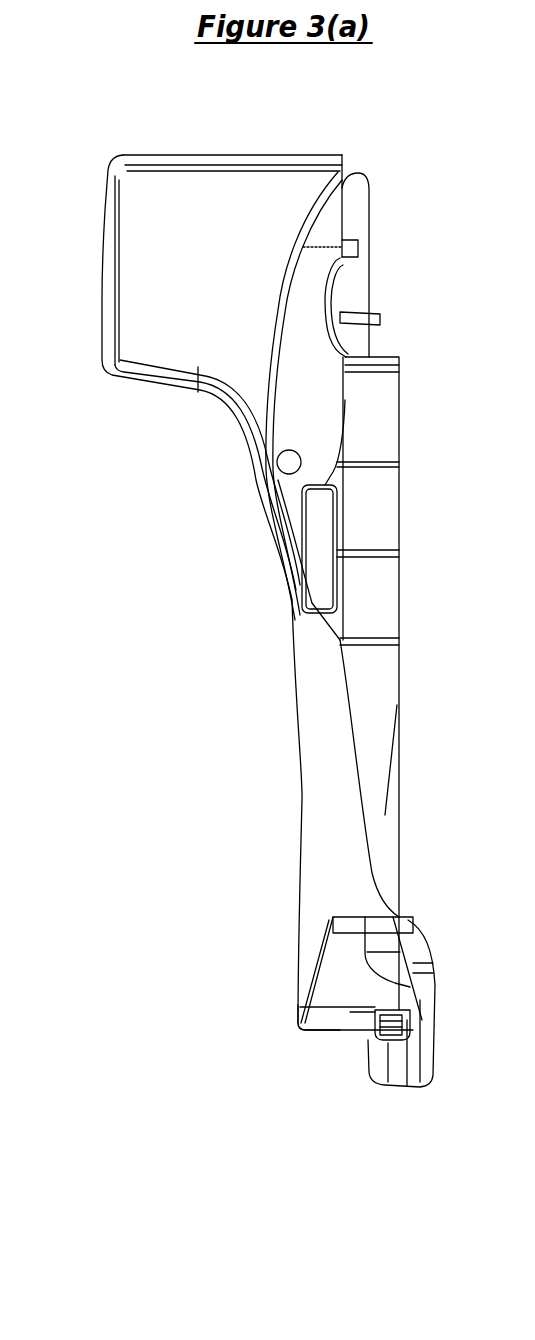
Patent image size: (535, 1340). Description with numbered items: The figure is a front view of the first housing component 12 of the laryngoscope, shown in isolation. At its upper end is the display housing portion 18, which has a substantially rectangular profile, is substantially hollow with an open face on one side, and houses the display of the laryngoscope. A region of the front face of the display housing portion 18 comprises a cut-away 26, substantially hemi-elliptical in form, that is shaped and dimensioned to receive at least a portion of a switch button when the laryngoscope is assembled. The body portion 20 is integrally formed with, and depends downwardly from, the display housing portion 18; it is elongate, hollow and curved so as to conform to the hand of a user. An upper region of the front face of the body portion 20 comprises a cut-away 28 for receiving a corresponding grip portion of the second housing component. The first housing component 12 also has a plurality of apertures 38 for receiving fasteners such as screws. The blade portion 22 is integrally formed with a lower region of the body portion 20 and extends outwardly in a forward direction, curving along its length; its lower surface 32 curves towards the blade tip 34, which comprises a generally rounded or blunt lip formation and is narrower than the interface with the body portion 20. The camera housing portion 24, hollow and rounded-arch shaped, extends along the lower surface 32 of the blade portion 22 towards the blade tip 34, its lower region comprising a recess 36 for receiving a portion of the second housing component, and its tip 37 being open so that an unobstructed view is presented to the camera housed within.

The first housing component 12 is at (150, 133).
The display housing portion 18 is at (180, 330).
The body portion 20 is at (300, 622).
The blade portion 22 is at (345, 977).
The camera housing portion 24 is at (398, 1077).
The cut-away 26 is at (328, 323).
The cut-away 28 is at (308, 553).
The lower surface 32 is at (325, 1022).
The blade tip 34 is at (390, 927).
The recess 36 is at (428, 1060).
The tip 37 is at (393, 1023).
The apertures 38 is at (289, 463).